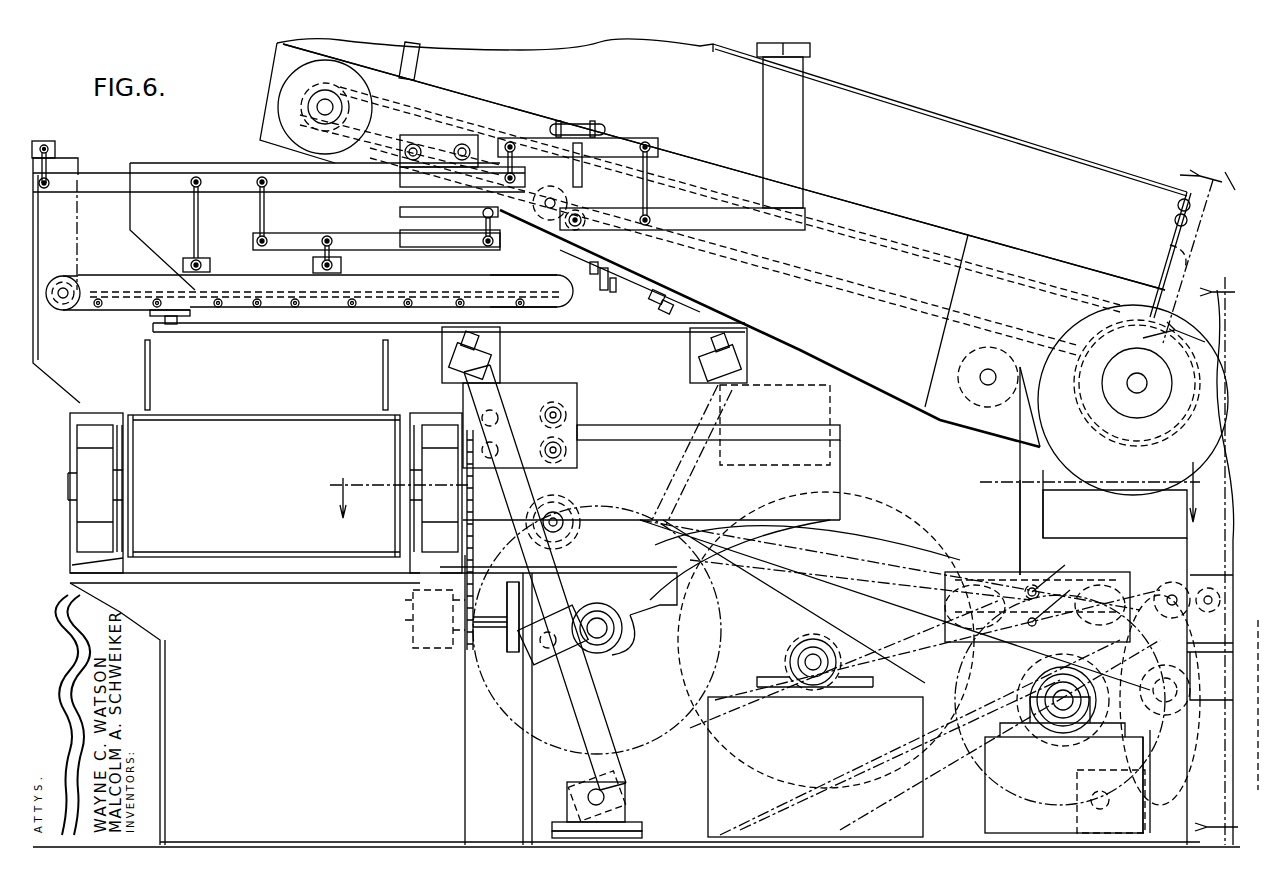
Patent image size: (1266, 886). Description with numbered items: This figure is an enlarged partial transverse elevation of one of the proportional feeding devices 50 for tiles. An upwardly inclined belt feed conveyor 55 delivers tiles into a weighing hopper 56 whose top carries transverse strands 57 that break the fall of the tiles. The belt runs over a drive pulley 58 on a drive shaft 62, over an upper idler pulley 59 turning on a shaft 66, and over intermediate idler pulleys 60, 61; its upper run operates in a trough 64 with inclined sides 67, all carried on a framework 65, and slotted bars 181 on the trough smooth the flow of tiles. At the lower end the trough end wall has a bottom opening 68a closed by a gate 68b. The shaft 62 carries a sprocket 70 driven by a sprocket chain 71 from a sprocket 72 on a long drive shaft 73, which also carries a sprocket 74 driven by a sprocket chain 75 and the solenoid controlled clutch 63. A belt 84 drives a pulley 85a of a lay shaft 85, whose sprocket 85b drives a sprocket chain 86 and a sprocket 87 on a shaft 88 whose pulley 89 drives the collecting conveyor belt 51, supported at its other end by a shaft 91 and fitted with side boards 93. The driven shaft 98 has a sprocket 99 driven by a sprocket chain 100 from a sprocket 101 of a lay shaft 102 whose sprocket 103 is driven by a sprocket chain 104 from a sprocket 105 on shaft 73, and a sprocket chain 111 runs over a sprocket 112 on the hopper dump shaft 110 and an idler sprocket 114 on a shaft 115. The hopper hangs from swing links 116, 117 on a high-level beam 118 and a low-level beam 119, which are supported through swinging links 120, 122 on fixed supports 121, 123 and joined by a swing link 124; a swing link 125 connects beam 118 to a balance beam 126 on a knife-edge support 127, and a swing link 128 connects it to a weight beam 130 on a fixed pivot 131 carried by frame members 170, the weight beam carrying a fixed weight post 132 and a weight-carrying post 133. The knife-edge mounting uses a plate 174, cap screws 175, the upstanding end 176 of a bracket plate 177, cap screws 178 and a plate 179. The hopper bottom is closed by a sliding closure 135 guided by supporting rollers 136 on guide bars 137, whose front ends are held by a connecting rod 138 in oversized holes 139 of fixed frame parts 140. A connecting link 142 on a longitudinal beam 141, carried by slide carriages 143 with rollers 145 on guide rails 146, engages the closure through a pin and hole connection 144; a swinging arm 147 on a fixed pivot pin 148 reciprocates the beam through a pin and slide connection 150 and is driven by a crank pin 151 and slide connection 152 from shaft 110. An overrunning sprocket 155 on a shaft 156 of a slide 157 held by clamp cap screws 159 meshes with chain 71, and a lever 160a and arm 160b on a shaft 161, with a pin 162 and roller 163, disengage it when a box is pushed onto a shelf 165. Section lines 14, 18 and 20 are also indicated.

The section line 14 is at (767, 488).
The section line 18 is at (1212, 557).
The section line 20 is at (1175, 253).
The proportional feeding device 50 is at (928, 430).
The collecting conveyor belt 51 is at (262, 415).
The belt feed conveyor 55 is at (862, 240).
The weighing hopper 56 is at (172, 163).
The transverse strands 57 is at (245, 163).
The drive pulley 58 is at (1082, 356).
The upper-end pulley 59 is at (355, 110).
The intermediate idler pulley 60 is at (962, 388).
The intermediate idler pulley 61 is at (533, 203).
The drive shaft 62 is at (1137, 383).
The solenoid controlled clutch 63 is at (1012, 690).
The trough 64 is at (1085, 170).
The framework 65 is at (1105, 540).
The shaft 66 is at (322, 107).
The inclined sides 67 is at (995, 135).
The bottom opening 68a is at (1175, 212).
The gate 68b is at (1186, 260).
The sprocket 70 is at (1025, 342).
The sprocket chain 71 is at (1020, 455).
The sprocket 72 is at (1035, 678).
The long drive shaft 73 is at (1058, 706).
The sprocket 74 is at (940, 737).
The sprocket chain 75 is at (825, 770).
The belt 84 is at (520, 785).
The lay shaft 85 is at (490, 615).
The pulley 85a is at (520, 708).
The sprocket 85b is at (468, 650).
The sprocket chain 86 is at (478, 562).
The sprocket 87 is at (462, 468).
The shaft 88 is at (123, 482).
The pulley 89 is at (398, 538).
The shaft 91 is at (575, 124).
The side boards 93 is at (145, 374).
The driven shaft 98 is at (560, 510).
The sprocket 99 is at (583, 535).
The sprocket chain 100 is at (760, 520).
The sprocket 101 is at (785, 530).
The lay shaft 102 is at (805, 662).
The sprocket 103 is at (840, 662).
The sprocket chain 104 is at (822, 640).
The sprocket 105 is at (925, 770).
The hopper dump shaft 110 is at (612, 627).
The sprocket chain 111 is at (805, 563).
The sprocket 112 is at (710, 572).
The idler sprocket 114 is at (1185, 720).
The shaft 115 is at (1185, 698).
The swing link 116 is at (194, 222).
The swing link 117 is at (313, 262).
The high-level beam 118 is at (108, 173).
The low-level beam 119 is at (350, 236).
The swinging link 120 is at (48, 165).
The fixed support 121 is at (48, 140).
The swinging link 122 is at (500, 232).
The fixed support 123 is at (490, 210).
The swing link 124 is at (262, 218).
The swing link 125 is at (490, 140).
The balance beam 126 is at (630, 138).
The knife-edge support 127 is at (583, 162).
The swing link 128 is at (652, 172).
The weight beam 130 is at (620, 230).
The fixed pivot 131 is at (582, 226).
The fixed weight post 132 is at (800, 135).
The weight-carrying post 133 is at (810, 50).
The sliding closure 135 is at (115, 290).
The supporting rollers 136 is at (130, 307).
The guide bars 137 is at (520, 262).
The connecting rod 138 is at (62, 282).
The oversized holes 139 is at (115, 304).
The fixed frame parts 140 is at (72, 230).
The longitudinal beam 141 is at (502, 345).
The connecting link 142 is at (278, 325).
The slide carriage 143 is at (575, 395).
The pin and hole connection 144 is at (171, 325).
The rollers 145 is at (498, 418).
The guide rails 146 is at (660, 425).
The swinging arm 147 is at (680, 480).
The fixed pivot pin 148 is at (613, 792).
The pin and slide connection 150 is at (498, 358).
The crank pin 151 is at (530, 652).
The slide connection 152 is at (580, 658).
The sprocket 155 is at (945, 590).
The shaft 156 is at (985, 572).
The slide 157 is at (1025, 575).
The clamp cap screws 159 is at (1040, 590).
The lever 160a is at (1070, 775).
The arm 160b is at (1182, 740).
The shaft 161 is at (1140, 803).
The pin 162 is at (1165, 588).
The roller 163 is at (1207, 588).
The shelf 165 is at (1210, 671).
The supporting frame members 170 is at (950, 228).
The plate 174 is at (600, 278).
The cap screws 175 is at (590, 266).
The upstanding end 176 is at (615, 292).
The bracket plate 177 is at (650, 297).
The cap screws 178 is at (660, 308).
The plate 179 is at (682, 298).
The slotted bars 181 is at (416, 62).